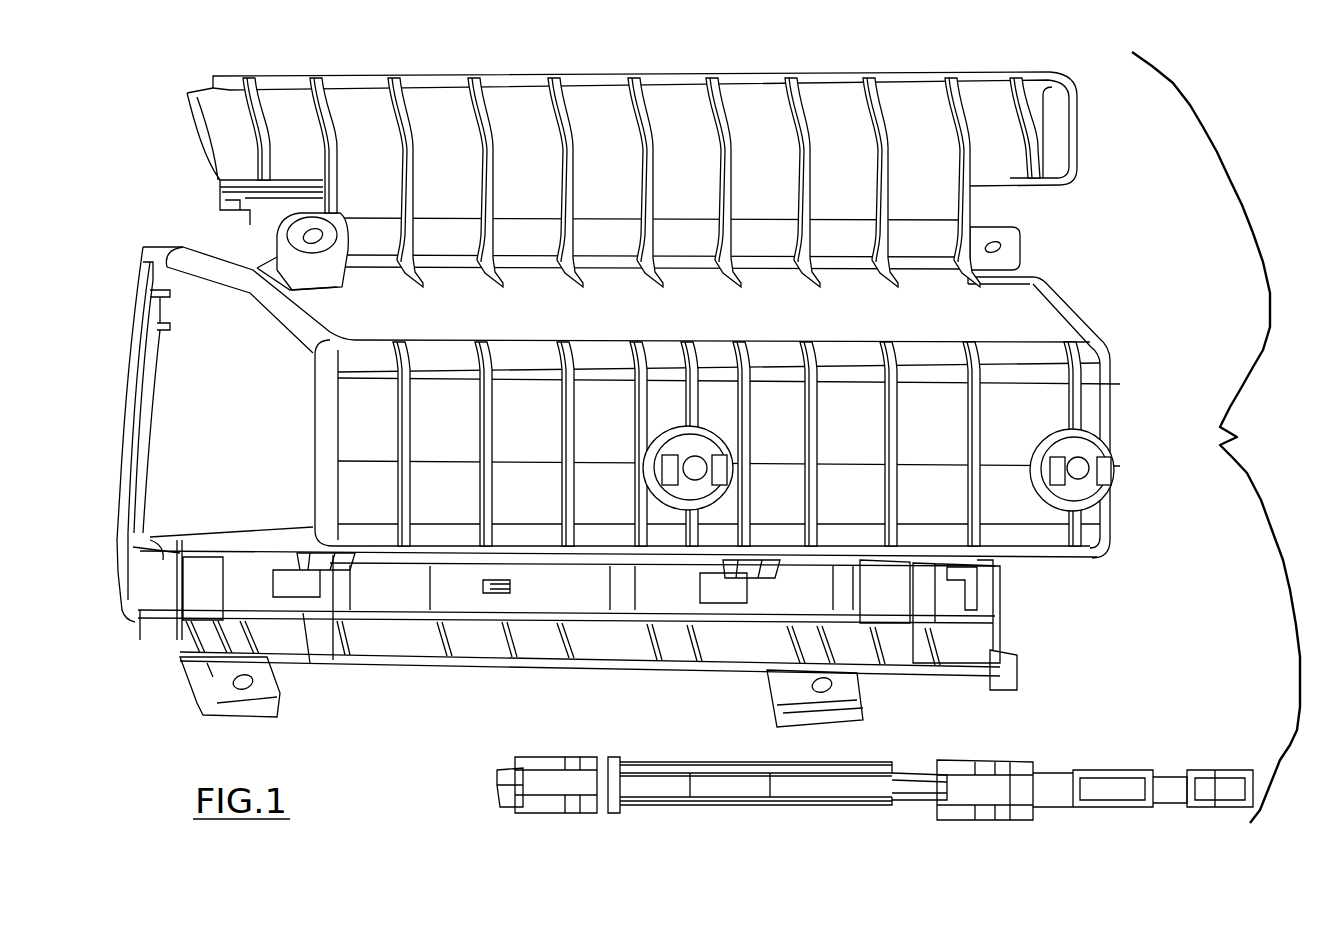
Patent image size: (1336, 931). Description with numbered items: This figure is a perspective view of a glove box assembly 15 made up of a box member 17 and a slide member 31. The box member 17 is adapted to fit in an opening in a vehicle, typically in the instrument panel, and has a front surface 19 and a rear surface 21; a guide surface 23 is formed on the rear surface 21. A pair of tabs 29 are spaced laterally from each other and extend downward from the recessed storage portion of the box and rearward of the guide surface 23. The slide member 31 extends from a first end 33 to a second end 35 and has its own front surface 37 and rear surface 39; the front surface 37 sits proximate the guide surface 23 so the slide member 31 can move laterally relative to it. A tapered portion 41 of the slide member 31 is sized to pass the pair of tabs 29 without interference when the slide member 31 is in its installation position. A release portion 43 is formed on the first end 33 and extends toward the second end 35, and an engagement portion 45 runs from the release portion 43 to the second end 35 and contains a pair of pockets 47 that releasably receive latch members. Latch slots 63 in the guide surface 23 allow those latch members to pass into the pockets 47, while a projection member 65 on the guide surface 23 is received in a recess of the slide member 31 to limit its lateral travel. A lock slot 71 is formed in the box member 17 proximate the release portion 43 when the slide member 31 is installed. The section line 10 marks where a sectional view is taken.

The section line 10 is at (617, 755).
The glove box assembly 15 is at (1216, 437).
The box member 17 is at (1063, 296).
The front surface 19 is at (157, 245).
The rear surface 21 is at (747, 120).
The guide surface 23 is at (383, 587).
The pair of tabs 29 is at (323, 573).
The slide member 31 is at (780, 817).
The first end 33 is at (1253, 790).
The second end 35 is at (497, 787).
The front surface 37 is at (633, 807).
The rear surface 39 is at (660, 760).
The tapered portion 41 is at (912, 770).
The release portion 43 is at (1113, 770).
The engagement portion 45 is at (838, 764).
The pair of pockets 47 is at (547, 767).
The latch slots 63 is at (283, 590).
The projection member 65 is at (517, 585).
The lock slot 71 is at (913, 620).